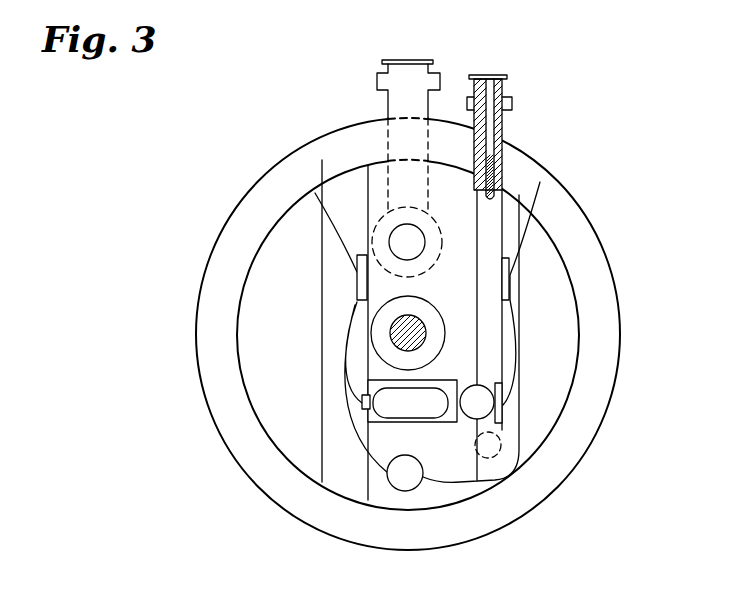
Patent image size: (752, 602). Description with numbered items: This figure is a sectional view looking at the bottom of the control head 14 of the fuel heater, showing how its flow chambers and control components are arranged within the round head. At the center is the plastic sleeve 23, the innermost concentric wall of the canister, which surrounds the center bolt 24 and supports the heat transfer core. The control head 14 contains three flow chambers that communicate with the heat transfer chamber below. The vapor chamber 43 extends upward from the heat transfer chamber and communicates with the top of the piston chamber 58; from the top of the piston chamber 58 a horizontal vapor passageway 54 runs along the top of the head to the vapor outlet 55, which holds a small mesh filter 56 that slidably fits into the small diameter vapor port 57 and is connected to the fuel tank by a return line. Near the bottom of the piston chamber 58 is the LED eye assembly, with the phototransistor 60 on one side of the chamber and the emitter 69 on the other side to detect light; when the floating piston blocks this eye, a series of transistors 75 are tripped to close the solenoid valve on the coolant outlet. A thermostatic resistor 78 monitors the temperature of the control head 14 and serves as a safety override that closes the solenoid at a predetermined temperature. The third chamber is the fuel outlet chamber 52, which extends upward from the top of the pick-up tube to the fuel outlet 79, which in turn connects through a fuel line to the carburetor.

The control head 14 is at (443, 490).
The plastic sleeve 23 is at (383, 345).
The center bolt 24 is at (395, 327).
The vapor chamber 43 is at (496, 455).
The fuel outlet chamber 52 is at (437, 262).
The horizontal vapor passageway 54 is at (493, 318).
The vapor outlet 55 is at (503, 122).
The small mesh filter 56 is at (494, 195).
The small diameter vapor port 57 is at (507, 78).
The piston chamber 58 is at (483, 393).
The phototransistor 60 is at (388, 413).
The emitter 69 is at (500, 404).
The transistors 75 is at (362, 257).
The thermostatic resistor 78 is at (404, 481).
The fuel outlet 79 is at (395, 80).